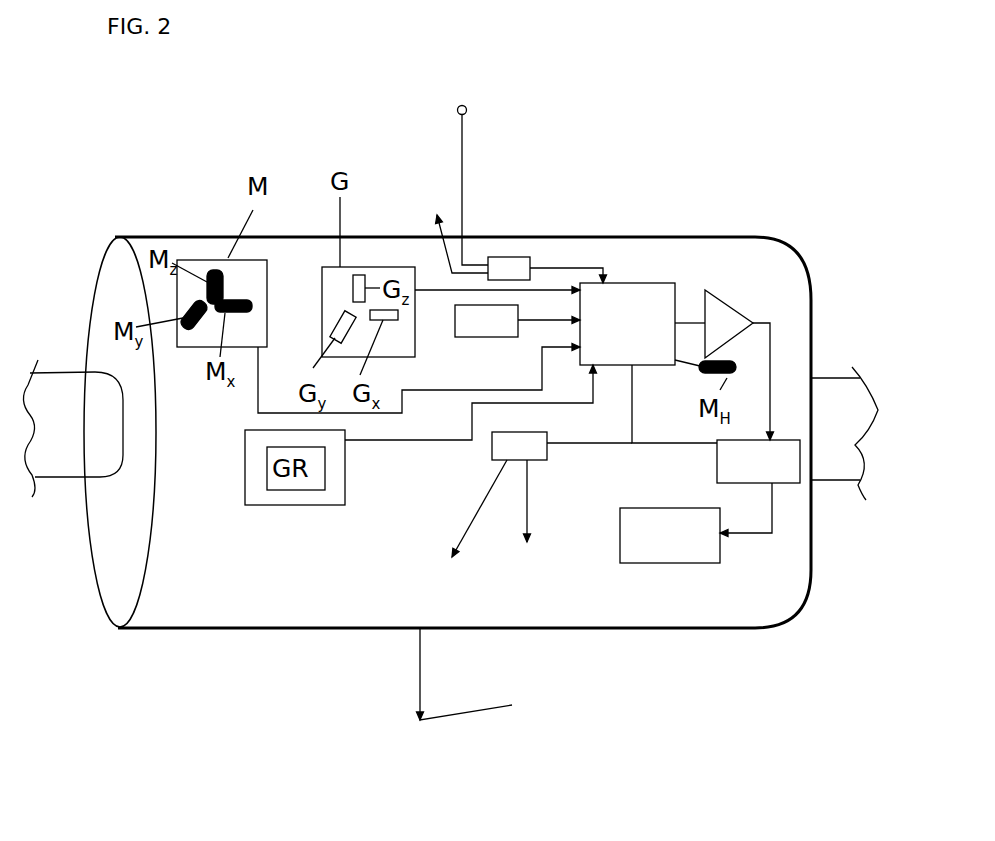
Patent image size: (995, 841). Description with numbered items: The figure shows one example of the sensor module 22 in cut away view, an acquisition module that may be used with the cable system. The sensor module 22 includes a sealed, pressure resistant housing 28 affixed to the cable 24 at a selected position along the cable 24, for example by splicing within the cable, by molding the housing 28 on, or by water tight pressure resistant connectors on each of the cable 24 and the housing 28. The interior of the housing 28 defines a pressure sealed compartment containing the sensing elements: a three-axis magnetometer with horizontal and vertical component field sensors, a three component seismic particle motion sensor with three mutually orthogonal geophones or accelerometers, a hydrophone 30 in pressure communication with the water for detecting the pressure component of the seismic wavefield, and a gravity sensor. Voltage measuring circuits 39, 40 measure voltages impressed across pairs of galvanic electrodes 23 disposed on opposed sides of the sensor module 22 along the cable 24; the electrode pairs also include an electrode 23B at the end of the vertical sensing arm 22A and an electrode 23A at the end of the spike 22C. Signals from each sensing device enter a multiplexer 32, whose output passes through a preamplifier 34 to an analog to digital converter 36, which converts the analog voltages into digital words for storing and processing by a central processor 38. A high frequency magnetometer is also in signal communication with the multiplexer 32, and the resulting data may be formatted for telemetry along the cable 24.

The sensor module 22 is at (707, 130).
The vertical sensing arm 22A is at (465, 168).
The spike 22C is at (418, 650).
The galvanic electrodes 23 is at (479, 539).
The electrode 23A is at (489, 443).
The electrode 23B is at (482, 96).
The cable 24 is at (70, 455).
The housing 28 is at (132, 237).
The hydrophone 30 is at (470, 327).
The multiplexer 32 is at (665, 291).
The preamplifier 34 is at (733, 320).
The analog to digital converter 36 is at (727, 457).
The central processor 38 is at (632, 553).
The voltage measuring circuit 39 is at (538, 455).
The voltage measuring circuit 40 is at (507, 257).